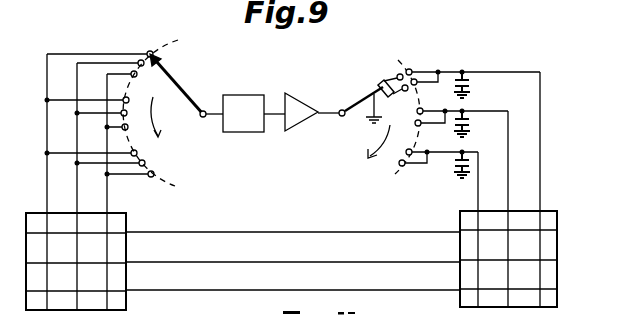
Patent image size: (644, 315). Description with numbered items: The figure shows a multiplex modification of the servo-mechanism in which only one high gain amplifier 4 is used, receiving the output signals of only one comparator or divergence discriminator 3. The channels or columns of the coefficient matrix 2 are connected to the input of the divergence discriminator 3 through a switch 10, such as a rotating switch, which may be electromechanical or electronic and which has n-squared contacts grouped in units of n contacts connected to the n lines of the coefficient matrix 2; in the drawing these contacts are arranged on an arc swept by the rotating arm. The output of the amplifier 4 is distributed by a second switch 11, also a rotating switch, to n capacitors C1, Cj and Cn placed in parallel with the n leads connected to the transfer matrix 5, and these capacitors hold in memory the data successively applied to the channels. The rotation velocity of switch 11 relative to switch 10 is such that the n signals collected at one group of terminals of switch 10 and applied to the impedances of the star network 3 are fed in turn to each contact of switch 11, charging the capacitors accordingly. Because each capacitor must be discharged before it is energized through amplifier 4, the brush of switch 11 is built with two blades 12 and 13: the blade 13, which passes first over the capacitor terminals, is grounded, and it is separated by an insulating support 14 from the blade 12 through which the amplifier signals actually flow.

The coefficient matrix 2 is at (76, 261).
The divergence discriminator 3 is at (243, 113).
The high gain amplifier 4 is at (301, 112).
The transfer matrix 5 is at (508, 259).
The switch 10 is at (178, 85).
The switch 11 is at (357, 101).
The blade 12 is at (401, 70).
The blade 13 is at (406, 97).
The insulating support 14 is at (378, 92).
The capacitor C1 is at (473, 85).
The capacitor Cj is at (471, 124).
The capacitor Cn is at (448, 165).